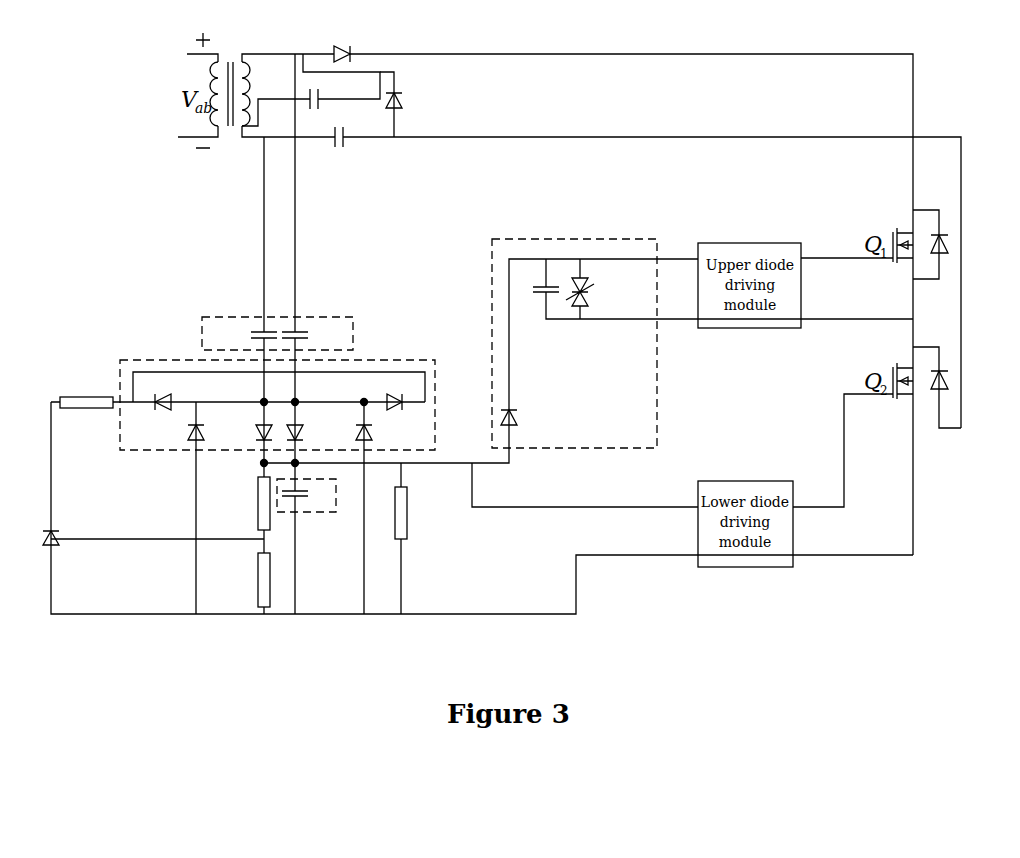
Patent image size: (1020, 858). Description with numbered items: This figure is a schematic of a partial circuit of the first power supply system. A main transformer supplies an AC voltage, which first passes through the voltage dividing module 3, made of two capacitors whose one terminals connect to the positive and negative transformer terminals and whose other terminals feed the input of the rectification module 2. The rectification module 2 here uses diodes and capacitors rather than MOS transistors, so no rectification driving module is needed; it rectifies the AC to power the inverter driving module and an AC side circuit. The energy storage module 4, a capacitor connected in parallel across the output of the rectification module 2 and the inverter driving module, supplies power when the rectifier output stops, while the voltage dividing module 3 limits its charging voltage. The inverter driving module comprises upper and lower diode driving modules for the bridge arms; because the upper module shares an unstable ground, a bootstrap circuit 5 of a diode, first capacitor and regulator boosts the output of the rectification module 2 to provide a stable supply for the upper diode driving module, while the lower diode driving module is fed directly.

The rectification module 2 is at (403, 359).
The voltage dividing module 3 is at (318, 316).
The energy storage module 4 is at (305, 512).
The bootstrap circuit 5 is at (588, 235).